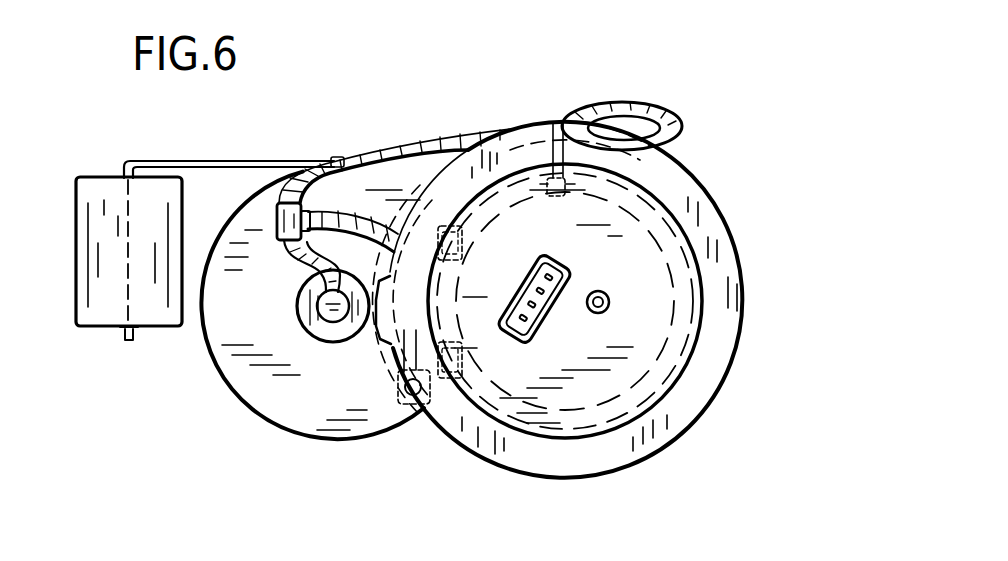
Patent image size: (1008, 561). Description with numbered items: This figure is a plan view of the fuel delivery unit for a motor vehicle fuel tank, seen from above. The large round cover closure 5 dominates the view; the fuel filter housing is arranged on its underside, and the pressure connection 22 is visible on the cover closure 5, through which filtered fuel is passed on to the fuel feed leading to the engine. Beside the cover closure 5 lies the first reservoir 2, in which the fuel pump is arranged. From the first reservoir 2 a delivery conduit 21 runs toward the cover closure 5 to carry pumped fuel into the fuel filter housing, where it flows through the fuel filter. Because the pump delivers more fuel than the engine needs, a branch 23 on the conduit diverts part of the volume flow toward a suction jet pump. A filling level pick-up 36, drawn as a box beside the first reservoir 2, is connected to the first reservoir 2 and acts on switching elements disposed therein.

The first reservoir 2 is at (247, 417).
The cover closure 5 is at (632, 252).
The delivery conduit 21 is at (421, 146).
The pressure connection 22 is at (609, 302).
The branch 23 is at (270, 202).
The filling level pick-up 36 is at (92, 240).